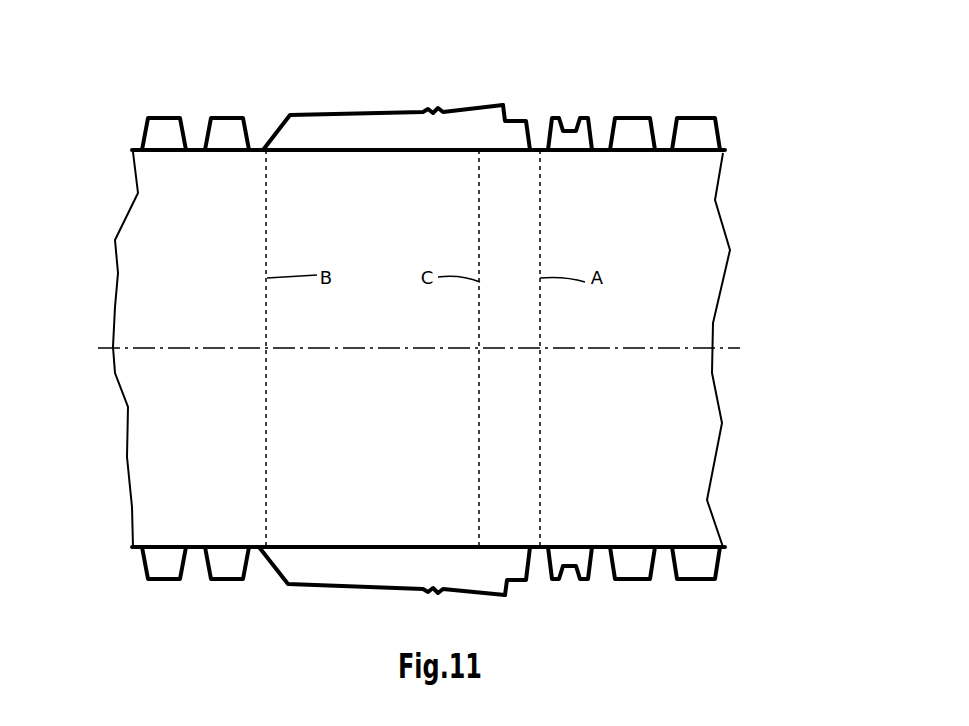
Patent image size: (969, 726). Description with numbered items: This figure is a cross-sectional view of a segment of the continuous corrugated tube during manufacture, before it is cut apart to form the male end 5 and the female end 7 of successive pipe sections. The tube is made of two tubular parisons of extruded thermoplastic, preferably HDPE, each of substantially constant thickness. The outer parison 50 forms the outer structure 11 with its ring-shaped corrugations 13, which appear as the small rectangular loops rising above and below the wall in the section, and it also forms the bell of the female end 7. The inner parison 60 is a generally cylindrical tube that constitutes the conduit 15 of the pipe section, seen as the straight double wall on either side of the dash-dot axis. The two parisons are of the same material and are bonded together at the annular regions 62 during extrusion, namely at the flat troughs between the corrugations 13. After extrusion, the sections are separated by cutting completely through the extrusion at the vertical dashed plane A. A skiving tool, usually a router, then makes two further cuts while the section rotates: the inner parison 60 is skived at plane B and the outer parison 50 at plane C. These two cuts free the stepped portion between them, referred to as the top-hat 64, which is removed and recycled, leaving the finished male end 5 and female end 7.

The male end 5 is at (582, 88).
The female end 7 is at (404, 78).
The outer structure 11 is at (145, 120).
The corrugations 13 is at (227, 117).
The conduit 15 is at (160, 153).
The outer parison 50 is at (320, 115).
The inner parison 60 is at (368, 157).
The annular regions 62 is at (258, 157).
The top-hat 64 is at (513, 118).